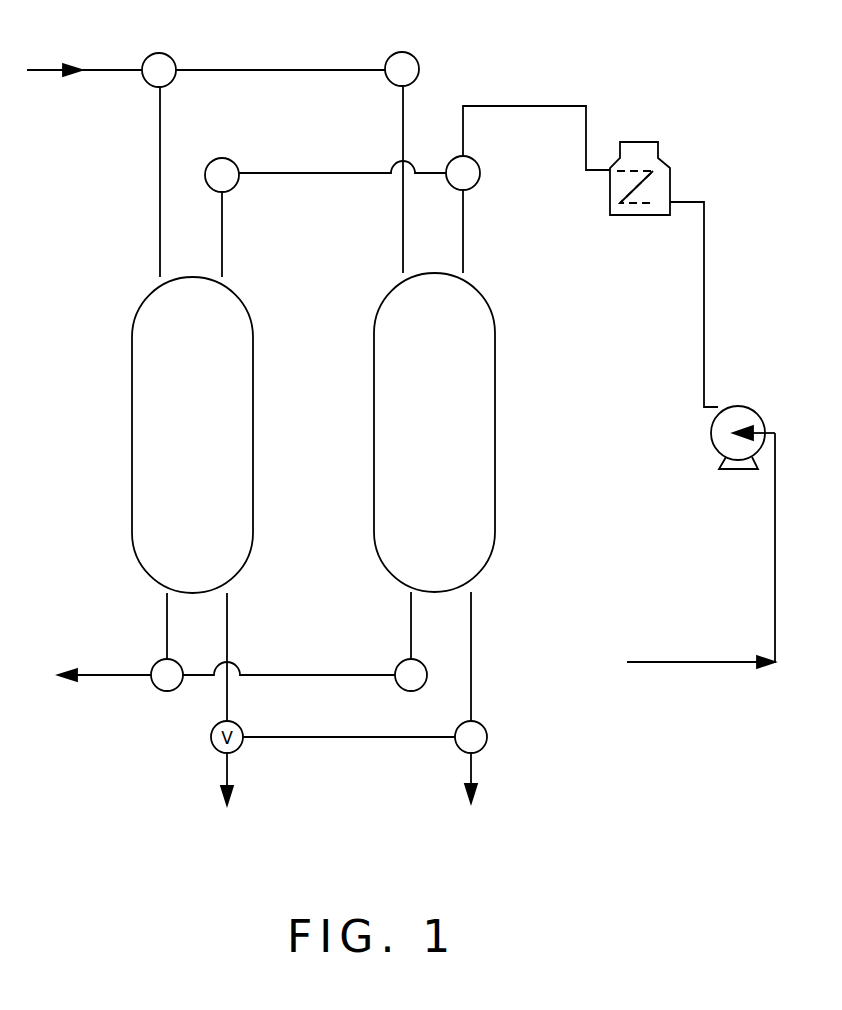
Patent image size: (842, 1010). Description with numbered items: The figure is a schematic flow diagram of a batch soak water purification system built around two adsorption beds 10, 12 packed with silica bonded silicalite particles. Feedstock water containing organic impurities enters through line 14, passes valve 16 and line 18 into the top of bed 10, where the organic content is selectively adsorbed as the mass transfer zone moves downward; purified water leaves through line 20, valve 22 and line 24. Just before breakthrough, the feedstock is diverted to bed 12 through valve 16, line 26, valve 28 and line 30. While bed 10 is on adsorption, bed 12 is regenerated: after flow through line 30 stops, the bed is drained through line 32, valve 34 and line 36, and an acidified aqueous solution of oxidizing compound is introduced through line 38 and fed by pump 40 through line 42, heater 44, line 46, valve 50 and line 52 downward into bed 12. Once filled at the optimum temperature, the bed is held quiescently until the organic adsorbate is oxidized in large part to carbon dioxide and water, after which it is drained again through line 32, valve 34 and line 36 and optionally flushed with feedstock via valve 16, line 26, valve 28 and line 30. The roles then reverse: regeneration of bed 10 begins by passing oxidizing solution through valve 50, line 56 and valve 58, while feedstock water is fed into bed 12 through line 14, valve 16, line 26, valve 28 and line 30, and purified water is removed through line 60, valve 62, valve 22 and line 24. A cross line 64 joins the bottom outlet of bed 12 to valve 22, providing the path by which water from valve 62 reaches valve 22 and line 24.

The adsorption bed 10 is at (254, 410).
The adsorption bed 12 is at (496, 327).
The line 14 is at (122, 68).
The valve 16 is at (172, 59).
The line 18 is at (161, 140).
The line 20 is at (166, 635).
The valve 22 is at (168, 692).
The line 24 is at (122, 680).
The line 26 is at (291, 67).
The valve 28 is at (415, 57).
The line 30 is at (403, 138).
The line 32 is at (473, 665).
The valve 34 is at (481, 723).
The line 36 is at (473, 770).
The line 38 is at (667, 662).
The pump 40 is at (742, 407).
The line 42 is at (706, 300).
The heater 44 is at (660, 165).
The line 46 is at (498, 106).
The valve 50 is at (477, 161).
The line 52 is at (465, 250).
The line 56 is at (288, 175).
The valve 58 is at (233, 161).
The line 60 is at (411, 640).
The valve 62 is at (408, 692).
The bottom cross line 64 is at (283, 671).